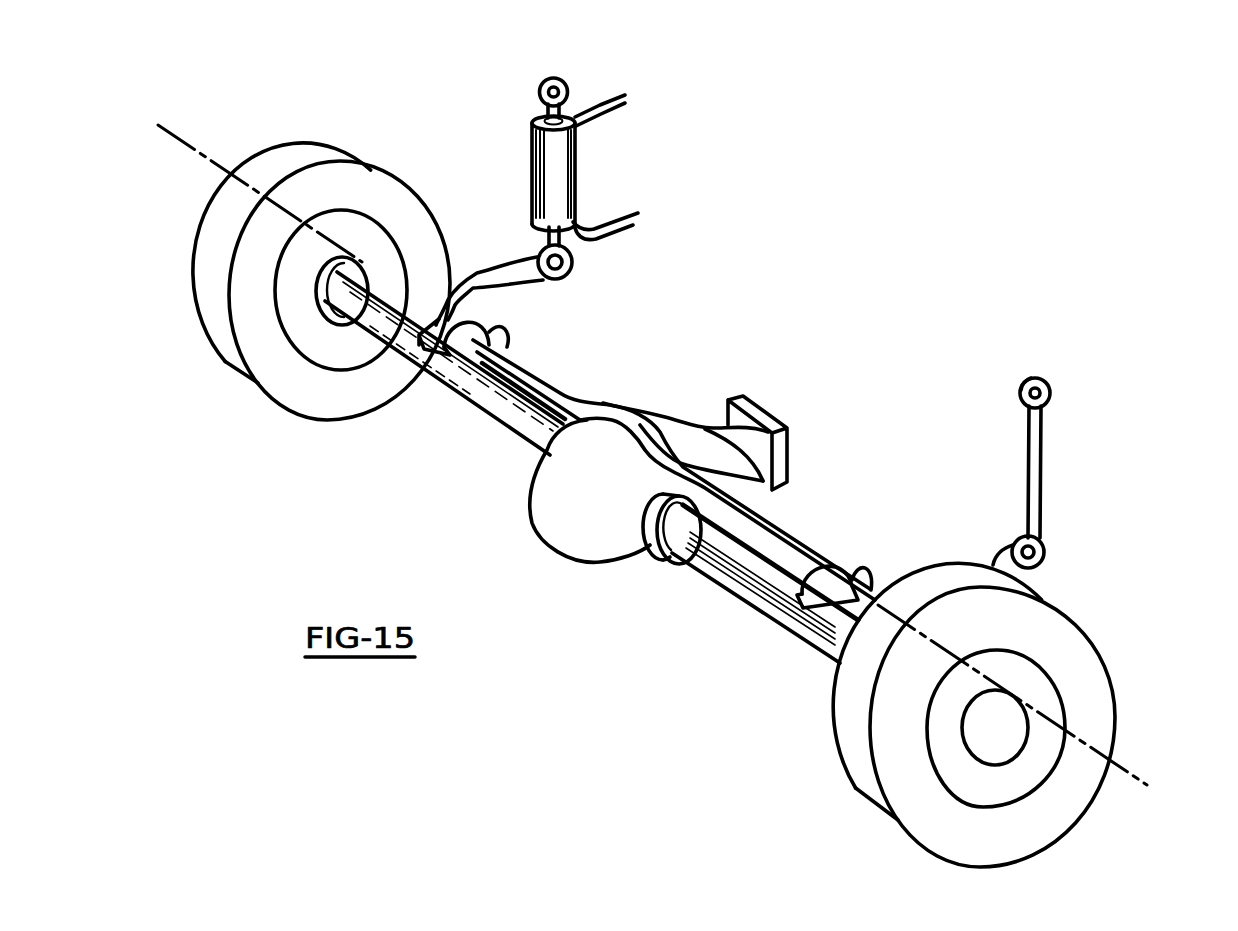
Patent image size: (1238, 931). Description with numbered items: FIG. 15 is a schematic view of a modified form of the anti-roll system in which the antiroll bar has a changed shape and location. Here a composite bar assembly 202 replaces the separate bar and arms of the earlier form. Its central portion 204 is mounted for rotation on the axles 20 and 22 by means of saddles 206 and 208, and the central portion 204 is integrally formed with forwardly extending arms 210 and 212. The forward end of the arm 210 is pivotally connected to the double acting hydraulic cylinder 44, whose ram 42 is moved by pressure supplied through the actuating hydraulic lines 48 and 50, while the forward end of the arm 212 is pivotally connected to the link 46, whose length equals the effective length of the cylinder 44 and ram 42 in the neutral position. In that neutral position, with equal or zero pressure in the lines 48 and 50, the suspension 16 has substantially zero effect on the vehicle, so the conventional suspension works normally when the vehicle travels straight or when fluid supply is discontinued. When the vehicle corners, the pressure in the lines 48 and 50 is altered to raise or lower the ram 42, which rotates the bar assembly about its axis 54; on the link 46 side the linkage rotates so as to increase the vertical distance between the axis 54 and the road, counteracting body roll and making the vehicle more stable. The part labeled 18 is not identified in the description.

The suspension 16 is at (218, 327).
The right wheel 18 is at (853, 737).
The axle 20 is at (473, 420).
The axle 22 is at (763, 597).
The ram 42 is at (541, 112).
The double acting hydraulic cylinder 44 is at (558, 173).
The link 46 is at (1033, 442).
The actuating hydraulic line 48 is at (602, 100).
The actuating hydraulic line 50 is at (633, 224).
The axis 54 is at (1140, 772).
The composite bar assembly 202 is at (552, 372).
The central portion 204 is at (582, 395).
The saddle 206 is at (467, 318).
The saddle 208 is at (830, 560).
The forwardly extending arm 210 is at (475, 280).
The forwardly extending arm 212 is at (1010, 550).